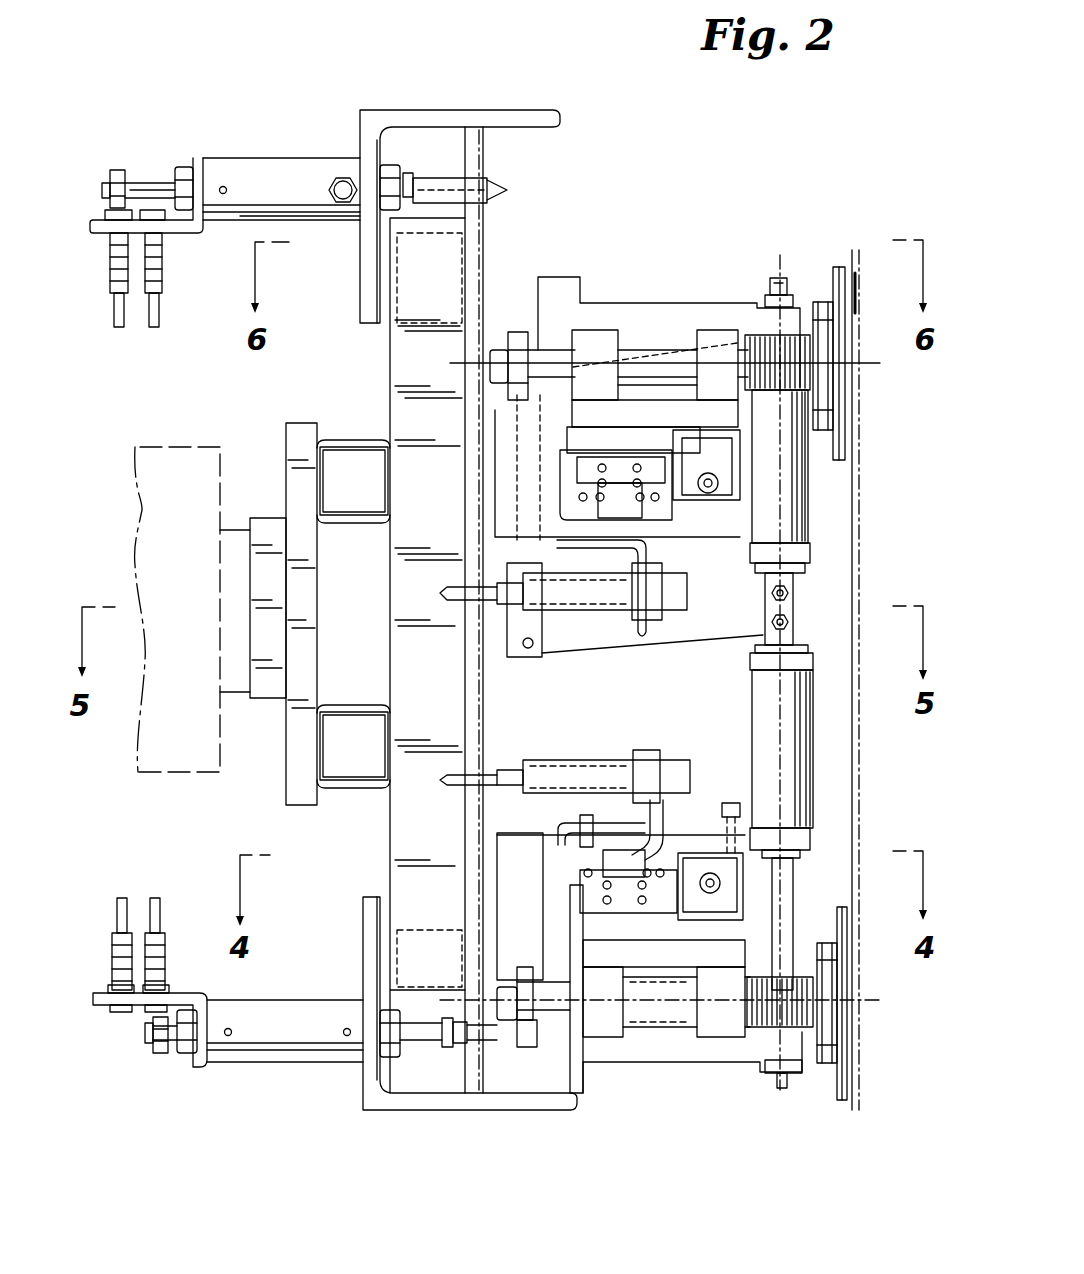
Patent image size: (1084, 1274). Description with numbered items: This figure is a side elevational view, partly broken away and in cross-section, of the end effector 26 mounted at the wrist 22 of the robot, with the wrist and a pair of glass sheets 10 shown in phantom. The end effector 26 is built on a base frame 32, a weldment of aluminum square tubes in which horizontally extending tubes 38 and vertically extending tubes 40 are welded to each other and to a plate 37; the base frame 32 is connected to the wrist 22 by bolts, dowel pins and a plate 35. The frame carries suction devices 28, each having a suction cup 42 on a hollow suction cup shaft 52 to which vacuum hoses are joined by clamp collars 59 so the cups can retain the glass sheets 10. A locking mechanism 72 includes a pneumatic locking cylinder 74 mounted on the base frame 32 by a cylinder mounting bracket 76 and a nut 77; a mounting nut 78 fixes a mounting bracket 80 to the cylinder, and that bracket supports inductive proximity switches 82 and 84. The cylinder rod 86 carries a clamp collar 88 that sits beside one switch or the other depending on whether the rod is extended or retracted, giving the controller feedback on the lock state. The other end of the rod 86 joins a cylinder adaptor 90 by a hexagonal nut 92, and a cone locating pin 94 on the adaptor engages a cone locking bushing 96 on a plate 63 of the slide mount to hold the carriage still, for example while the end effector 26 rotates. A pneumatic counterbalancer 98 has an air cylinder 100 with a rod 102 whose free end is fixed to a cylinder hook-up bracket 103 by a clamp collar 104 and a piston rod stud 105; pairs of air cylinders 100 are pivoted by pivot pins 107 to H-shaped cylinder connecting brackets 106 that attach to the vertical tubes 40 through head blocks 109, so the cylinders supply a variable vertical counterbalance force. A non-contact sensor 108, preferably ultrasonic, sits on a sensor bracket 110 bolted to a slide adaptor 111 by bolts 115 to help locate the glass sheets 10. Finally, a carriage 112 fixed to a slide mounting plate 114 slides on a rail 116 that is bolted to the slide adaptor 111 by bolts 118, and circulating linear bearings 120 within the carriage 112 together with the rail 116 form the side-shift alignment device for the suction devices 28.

The glass sheets 10 is at (862, 542).
The wrist 22 is at (142, 517).
The end effector 26 is at (832, 176).
The suction devices 28 is at (841, 265).
The base frame 32 is at (288, 447).
The plate 35 is at (250, 548).
The plate 37 is at (305, 423).
The horizontally extending tubes 38 is at (362, 440).
The vertically extending tubes 40 is at (392, 345).
The suction cup 42 is at (828, 302).
The suction cup shaft 52 is at (540, 350).
The clamp collars 59 is at (510, 335).
The plate 63 is at (578, 1093).
The locking mechanism 72 is at (232, 147).
The pneumatic locking cylinder 74 is at (303, 158).
The cylinder mounting bracket 76 is at (373, 112).
The nut 77 is at (390, 165).
The mounting nut 78 is at (180, 167).
The mounting bracket 80 is at (195, 233).
The inductive proximity switch 82 is at (110, 288).
The inductive proximity switch 84 is at (160, 290).
The rod 86 is at (106, 185).
The clamp collar 88 is at (115, 170).
The cylinder adaptor 90 is at (437, 178).
The hexagonal nut 92 is at (408, 173).
The cone locating pin 94 is at (497, 180).
The cone locking bushing 96 is at (507, 1022).
The pneumatic counterbalancer 98 is at (815, 518).
The air cylinder 100 is at (810, 540).
The rod 102 is at (795, 872).
The cylinder hook-up bracket 103 is at (685, 303).
The clamp collar 104 is at (778, 295).
The piston rod stud 105 is at (770, 282).
The H-shaped cylinder connecting bracket 106 is at (605, 648).
The pivot pins 107 is at (790, 595).
The non-contact sensor 108 is at (548, 760).
The head blocks 109 is at (545, 645).
The sensor bracket 110 is at (660, 803).
The slide adaptor 111 is at (540, 850).
The carriage 112 is at (620, 457).
The slide mounting plate 114 is at (740, 437).
The bolts 115 is at (580, 823).
The rail 116 is at (635, 522).
The bolts 118 is at (607, 850).
The circulating linear bearings 120 is at (577, 497).